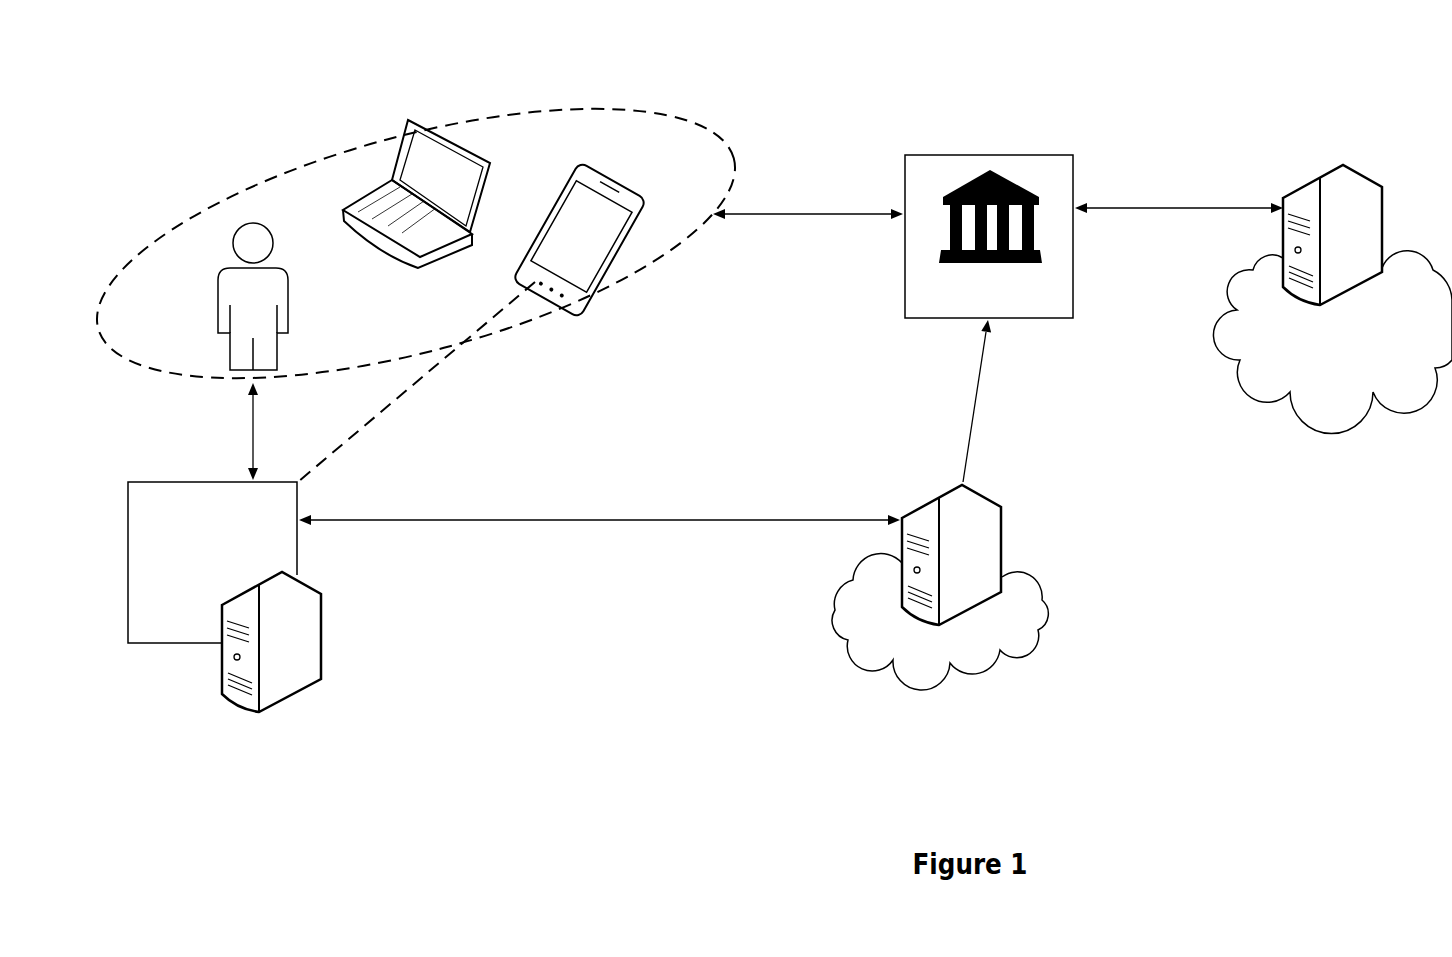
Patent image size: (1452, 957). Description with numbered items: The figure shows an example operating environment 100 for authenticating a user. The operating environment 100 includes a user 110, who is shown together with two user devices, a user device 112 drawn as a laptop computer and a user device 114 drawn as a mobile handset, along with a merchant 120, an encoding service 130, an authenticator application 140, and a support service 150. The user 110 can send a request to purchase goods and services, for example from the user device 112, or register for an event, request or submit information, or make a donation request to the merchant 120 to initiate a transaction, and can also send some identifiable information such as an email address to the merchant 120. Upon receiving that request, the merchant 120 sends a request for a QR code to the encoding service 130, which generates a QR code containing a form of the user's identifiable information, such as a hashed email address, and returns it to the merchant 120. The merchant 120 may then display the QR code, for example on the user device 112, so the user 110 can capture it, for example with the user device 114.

The operating environment 100 is at (229, 108).
The user 110 is at (172, 230).
The user device 112 is at (468, 150).
The user device 114 is at (617, 242).
The merchant 120 is at (957, 160).
The encoding service 130 is at (1343, 165).
The authenticator application 140 is at (197, 487).
The support service 150 is at (1003, 553).